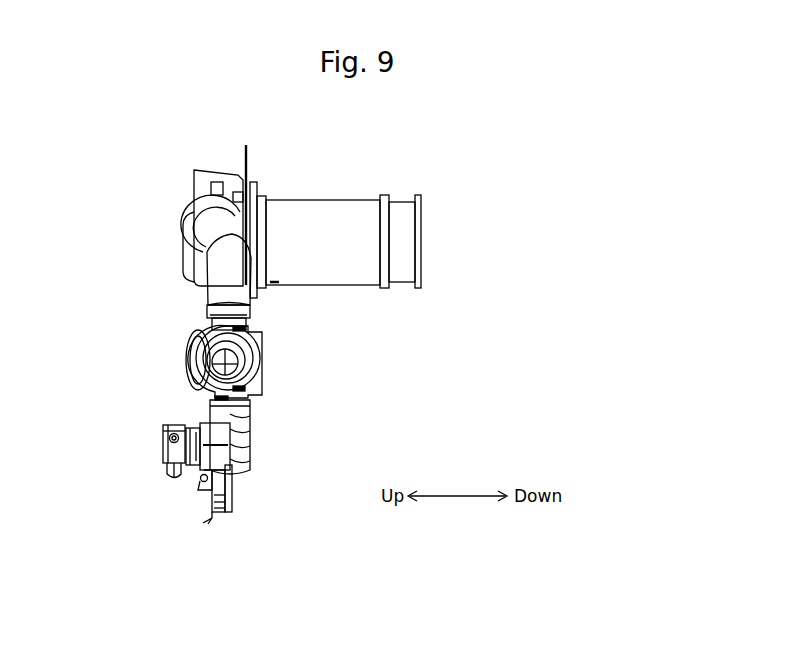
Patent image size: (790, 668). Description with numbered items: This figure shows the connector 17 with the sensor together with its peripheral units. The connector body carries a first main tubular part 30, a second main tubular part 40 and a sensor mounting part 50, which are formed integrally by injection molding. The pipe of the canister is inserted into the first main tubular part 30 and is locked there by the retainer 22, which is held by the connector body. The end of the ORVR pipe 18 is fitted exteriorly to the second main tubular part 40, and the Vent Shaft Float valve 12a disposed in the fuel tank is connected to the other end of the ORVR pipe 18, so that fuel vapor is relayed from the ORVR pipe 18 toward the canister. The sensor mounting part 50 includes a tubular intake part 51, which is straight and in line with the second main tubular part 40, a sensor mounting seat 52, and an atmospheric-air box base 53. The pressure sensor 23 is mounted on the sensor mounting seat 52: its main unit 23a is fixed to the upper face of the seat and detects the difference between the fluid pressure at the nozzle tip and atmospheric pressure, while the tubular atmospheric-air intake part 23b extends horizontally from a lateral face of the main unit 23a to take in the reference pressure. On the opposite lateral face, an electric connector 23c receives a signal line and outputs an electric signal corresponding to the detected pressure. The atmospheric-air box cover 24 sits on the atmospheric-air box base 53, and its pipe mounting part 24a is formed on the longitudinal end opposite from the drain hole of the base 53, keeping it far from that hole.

The Vent Shaft Float (VSF) valve 12a is at (337, 200).
The ORVR pipe 18 is at (217, 272).
The second main tubular part 40 is at (242, 312).
The retainer 22 is at (195, 357).
The first main tubular part 30 is at (252, 339).
The connector with the sensor 17 is at (266, 367).
The sensor mounting seat 52 is at (195, 432).
The tubular intake part 51 is at (245, 420).
The sensor mounting part 50 is at (250, 445).
The pressure sensor 23 is at (135, 463).
The main unit 23a is at (167, 452).
The atmospheric-air intake part 23b is at (171, 434).
The electric connector 23c is at (160, 463).
The atmospheric-air box base 53 is at (232, 495).
The atmospheric-air box cover 24 is at (224, 537).
The pipe mounting part 24a is at (200, 488).